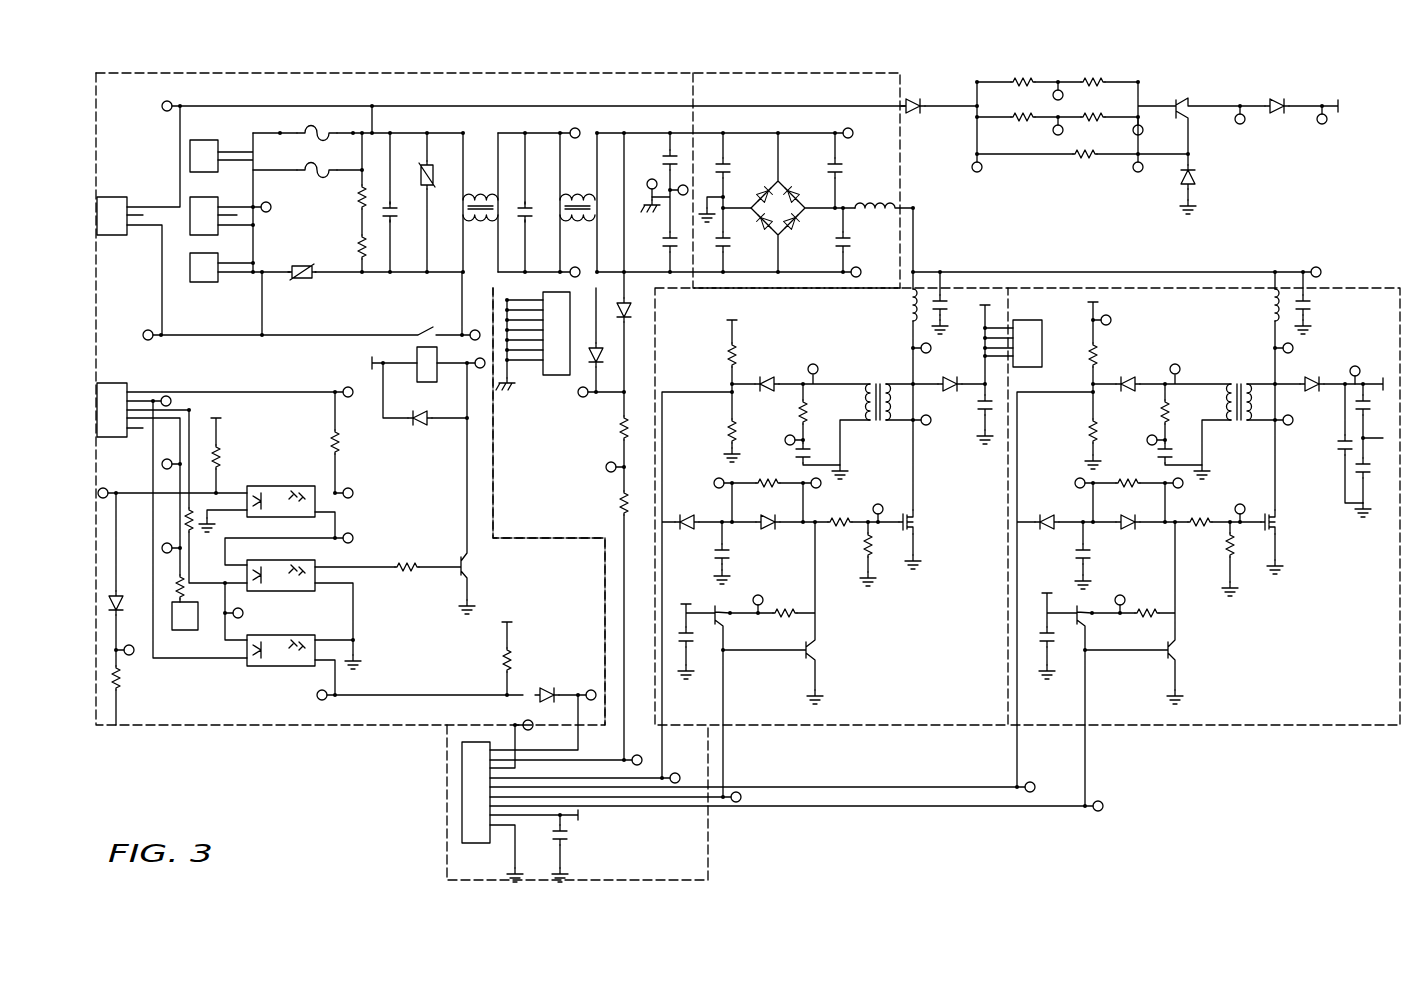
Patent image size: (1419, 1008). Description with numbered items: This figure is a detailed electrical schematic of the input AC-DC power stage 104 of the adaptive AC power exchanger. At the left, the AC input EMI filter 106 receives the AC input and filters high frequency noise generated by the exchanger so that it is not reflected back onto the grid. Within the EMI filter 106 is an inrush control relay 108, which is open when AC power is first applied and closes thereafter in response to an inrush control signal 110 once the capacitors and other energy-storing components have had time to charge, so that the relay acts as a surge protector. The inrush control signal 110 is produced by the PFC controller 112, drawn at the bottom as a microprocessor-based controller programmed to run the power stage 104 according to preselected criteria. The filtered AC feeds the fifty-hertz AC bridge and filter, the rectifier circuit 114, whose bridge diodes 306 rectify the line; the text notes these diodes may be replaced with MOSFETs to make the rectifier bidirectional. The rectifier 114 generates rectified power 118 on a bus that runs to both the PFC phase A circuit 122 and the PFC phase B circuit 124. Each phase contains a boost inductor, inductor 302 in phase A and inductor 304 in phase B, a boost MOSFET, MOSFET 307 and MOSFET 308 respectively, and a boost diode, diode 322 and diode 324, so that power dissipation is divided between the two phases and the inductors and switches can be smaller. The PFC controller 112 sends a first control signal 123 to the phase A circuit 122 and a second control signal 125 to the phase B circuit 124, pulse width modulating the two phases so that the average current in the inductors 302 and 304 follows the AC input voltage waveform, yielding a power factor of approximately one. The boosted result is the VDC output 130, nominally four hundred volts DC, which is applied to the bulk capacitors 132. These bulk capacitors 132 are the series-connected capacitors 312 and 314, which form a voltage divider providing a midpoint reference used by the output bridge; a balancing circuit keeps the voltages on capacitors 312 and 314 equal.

The input AC-DC power stage 104 is at (498, 160).
The AC input EMI filter 106 is at (137, 111).
The inrush control relay 108 is at (420, 358).
The inrush control signal 110 is at (624, 482).
The PFC controller 112 is at (439, 771).
The 50 Hz AC bridge and filter (rectifier circuit) 114 is at (896, 134).
The rectified power 118 is at (968, 272).
The PFC phase A circuit 122 is at (710, 324).
The first control signal 123 is at (723, 694).
The PFC phase B circuit 124 is at (1052, 317).
The second control signal 125 is at (1085, 706).
The VDC output 130 is at (1364, 378).
The bulk capacitors 132 is at (1360, 576).
The boost inductor (phase A) 302 is at (908, 318).
The boost inductor (phase B) 304 is at (1270, 326).
The bridge diodes 306 is at (790, 222).
The boost MOSFET (phase A) 307 is at (922, 518).
The boost MOSFET (phase B) 308 is at (1285, 530).
The bulk capacitor (first segment) 312 is at (1384, 402).
The bulk capacitor (second segment) 314 is at (1360, 470).
The boost diode (phase A) 322 is at (952, 396).
The boost diode (phase B) 324 is at (1316, 396).